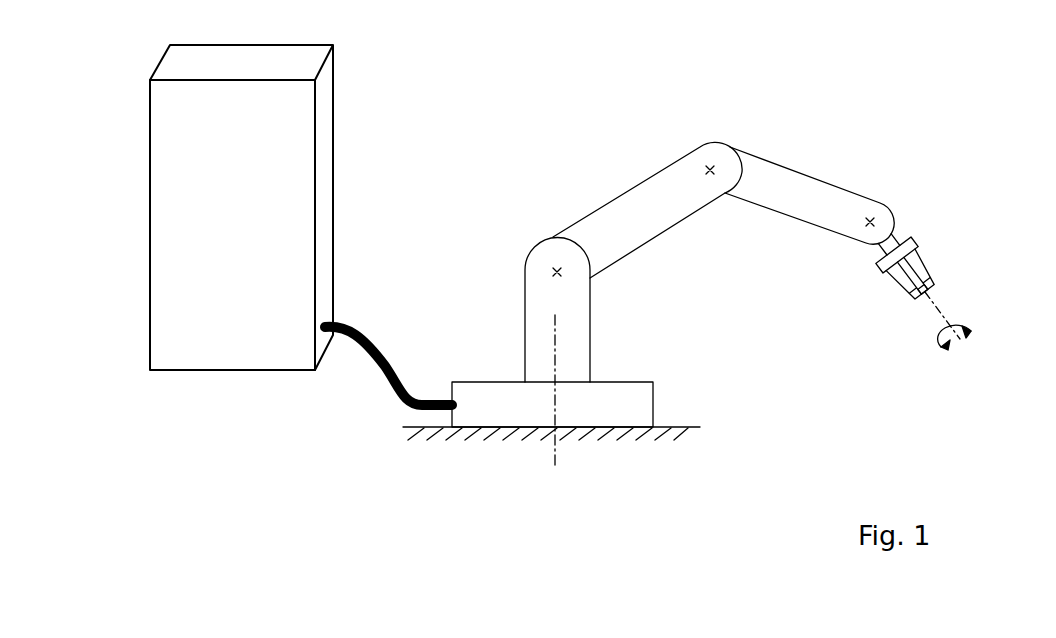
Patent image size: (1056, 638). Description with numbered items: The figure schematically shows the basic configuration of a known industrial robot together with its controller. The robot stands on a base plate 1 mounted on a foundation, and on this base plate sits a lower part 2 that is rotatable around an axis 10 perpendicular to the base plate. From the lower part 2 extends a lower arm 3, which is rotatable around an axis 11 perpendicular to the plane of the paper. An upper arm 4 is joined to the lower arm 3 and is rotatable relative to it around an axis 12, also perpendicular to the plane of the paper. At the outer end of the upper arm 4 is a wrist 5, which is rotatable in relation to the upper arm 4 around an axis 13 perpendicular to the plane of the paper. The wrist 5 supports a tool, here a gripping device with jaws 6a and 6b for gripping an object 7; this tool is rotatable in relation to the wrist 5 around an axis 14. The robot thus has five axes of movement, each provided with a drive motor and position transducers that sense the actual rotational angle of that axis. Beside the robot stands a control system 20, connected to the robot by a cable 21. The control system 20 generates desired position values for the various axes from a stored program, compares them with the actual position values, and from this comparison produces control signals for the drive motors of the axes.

The base plate 1 is at (492, 410).
The lower part 2 is at (582, 323).
The lower arm 3 is at (675, 215).
The upper arm 4 is at (787, 202).
The wrist 5 is at (898, 240).
The jaw 6a is at (922, 267).
The jaw 6b is at (900, 282).
The object 7 is at (930, 297).
The axis 10 is at (555, 442).
The axis 11 is at (555, 272).
The axis 12 is at (707, 168).
The axis 13 is at (870, 217).
The axis 14 is at (965, 348).
The control system 20 is at (233, 360).
The cable 21 is at (370, 340).